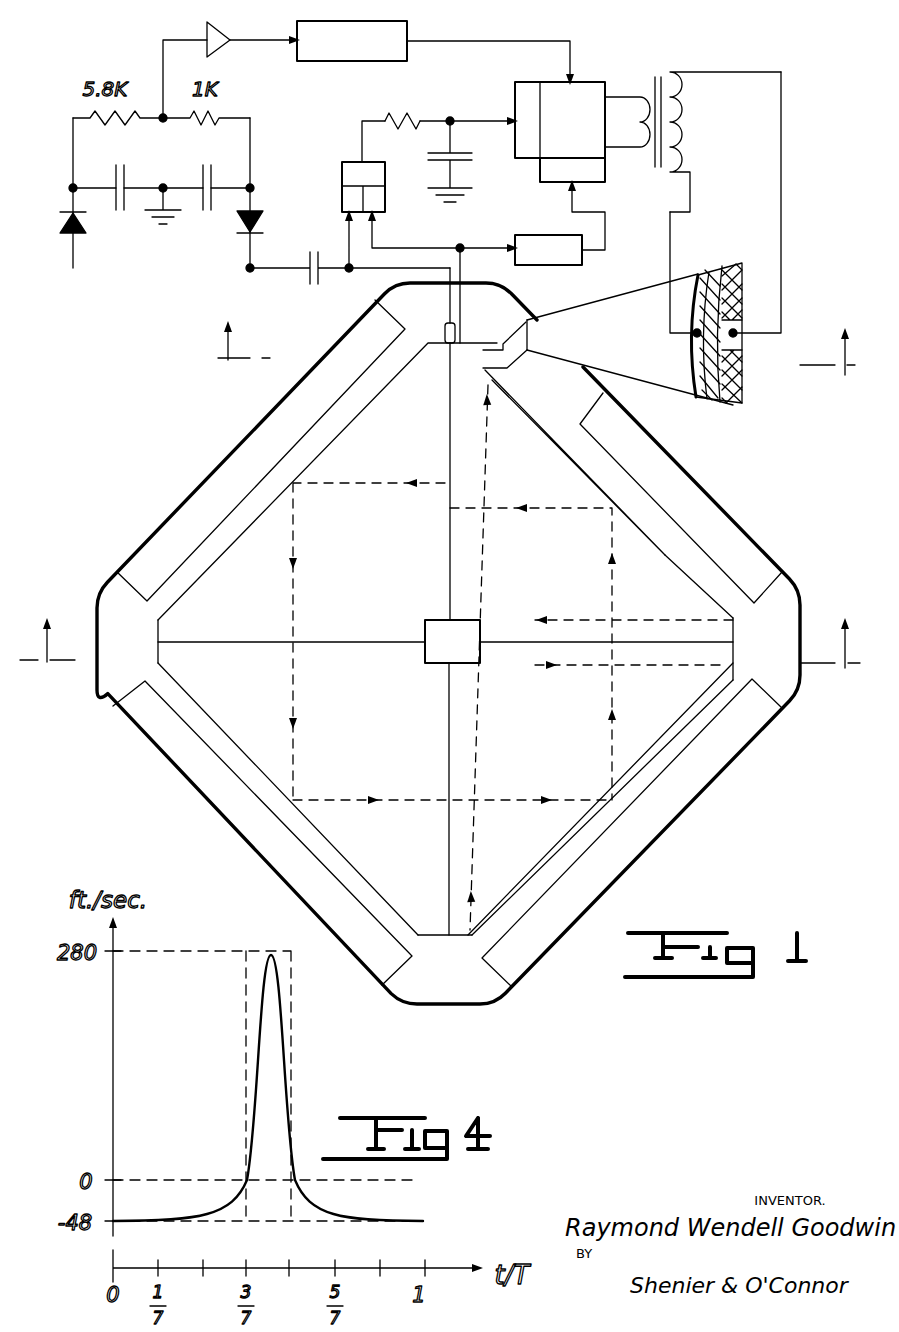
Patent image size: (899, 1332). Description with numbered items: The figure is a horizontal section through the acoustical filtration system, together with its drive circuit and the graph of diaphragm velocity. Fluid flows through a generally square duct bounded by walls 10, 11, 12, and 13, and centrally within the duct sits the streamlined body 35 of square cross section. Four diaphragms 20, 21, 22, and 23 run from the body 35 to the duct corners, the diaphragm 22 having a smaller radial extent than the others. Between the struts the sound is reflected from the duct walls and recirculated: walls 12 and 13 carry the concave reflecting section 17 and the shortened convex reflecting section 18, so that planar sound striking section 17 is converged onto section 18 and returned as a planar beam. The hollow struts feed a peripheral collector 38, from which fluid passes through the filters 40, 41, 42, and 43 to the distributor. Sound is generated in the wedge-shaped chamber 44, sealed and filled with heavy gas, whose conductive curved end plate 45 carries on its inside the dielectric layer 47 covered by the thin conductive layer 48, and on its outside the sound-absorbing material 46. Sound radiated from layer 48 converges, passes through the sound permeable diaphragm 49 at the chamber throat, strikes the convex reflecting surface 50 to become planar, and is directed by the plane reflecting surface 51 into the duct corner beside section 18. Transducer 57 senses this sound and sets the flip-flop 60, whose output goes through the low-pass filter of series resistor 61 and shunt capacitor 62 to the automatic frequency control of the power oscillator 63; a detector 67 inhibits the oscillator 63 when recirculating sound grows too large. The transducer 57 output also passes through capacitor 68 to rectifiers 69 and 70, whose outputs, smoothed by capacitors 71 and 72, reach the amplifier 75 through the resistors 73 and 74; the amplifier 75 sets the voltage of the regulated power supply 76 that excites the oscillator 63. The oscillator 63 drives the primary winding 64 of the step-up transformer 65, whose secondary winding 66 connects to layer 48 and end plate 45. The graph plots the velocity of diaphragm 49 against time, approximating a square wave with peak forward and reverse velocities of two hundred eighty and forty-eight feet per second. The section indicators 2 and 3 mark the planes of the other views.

The section line 2- 2 is at (440, 627).
The section line 3- 3 is at (536, 333).
The duct wall 10 is at (195, 590).
The duct wall 11 is at (350, 862).
The duct wall 12 is at (548, 852).
The duct wall 13 is at (660, 548).
The concave reflecting section 17 is at (668, 727).
The convex reflecting section 18 is at (563, 450).
The diaphragm 20 is at (318, 640).
The diaphragm 21 is at (449, 748).
The diaphragm 22 is at (490, 652).
The diaphragm 23 is at (450, 556).
The streamlined body 35 is at (430, 665).
The peripheral collector 38 is at (100, 705).
The filter 40 is at (255, 433).
The filter 41 is at (228, 838).
The filter 42 is at (656, 840).
The filter 43 is at (760, 545).
The wedge-shaped chamber 44 is at (620, 290).
The curved end plate 45 is at (718, 405).
The sound-absorbing material 46 is at (745, 378).
The dielectric layer 47 is at (702, 270).
The conductive layer 48 is at (693, 345).
The sound permeable diaphragm 49 is at (532, 336).
The convex reflecting surface 50 is at (514, 324).
The plane reflecting surface 51 is at (512, 372).
The transducer 57 is at (447, 322).
The flip-flop 60 is at (345, 163).
The series resistor 61 is at (415, 115).
The shunt capacitor 62 is at (472, 160).
The power oscillator 63 is at (602, 80).
The primary winding 64 is at (640, 150).
The step-up transformer 65 is at (668, 68).
The secondary winding 66 is at (700, 142).
The detector 67 is at (535, 235).
The capacitor 68 is at (307, 262).
The rectifier 69 is at (60, 232).
The rectifier 70 is at (265, 213).
The capacitor 71 is at (120, 212).
The capacitor 72 is at (208, 212).
The 5.8 K resistor 73 is at (112, 127).
The 1K resistor 74 is at (208, 127).
The inverting buffer amplifier 75 is at (228, 42).
The regulated power supply 76 is at (303, 62).